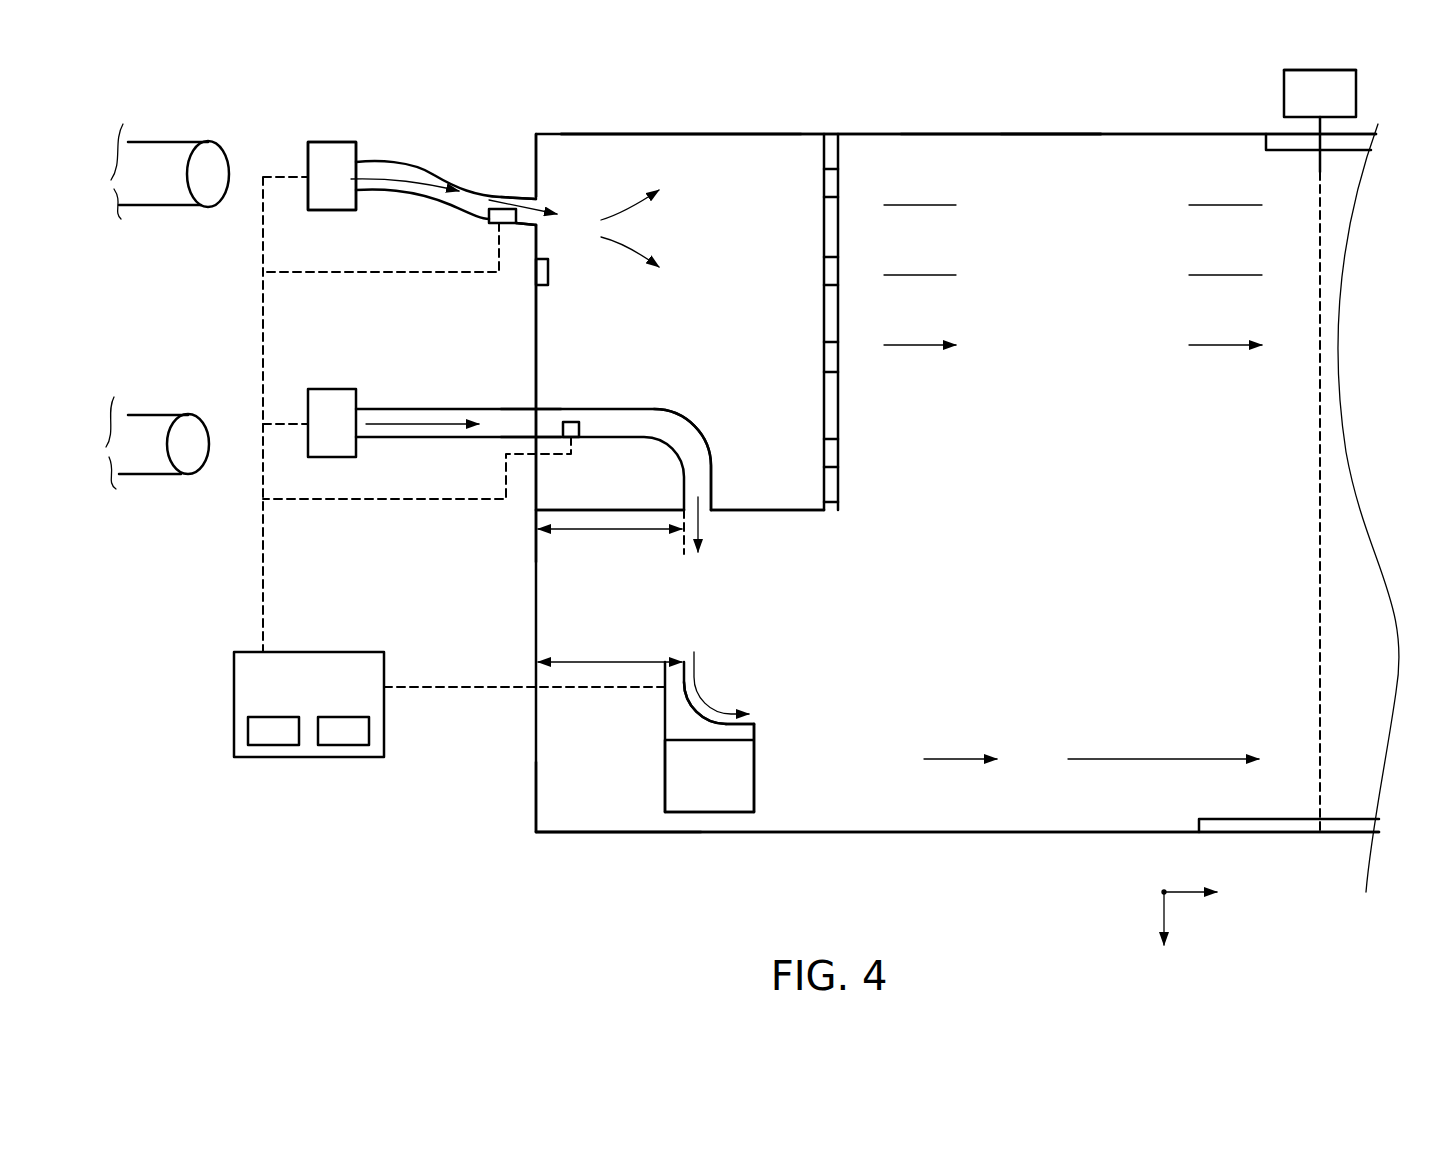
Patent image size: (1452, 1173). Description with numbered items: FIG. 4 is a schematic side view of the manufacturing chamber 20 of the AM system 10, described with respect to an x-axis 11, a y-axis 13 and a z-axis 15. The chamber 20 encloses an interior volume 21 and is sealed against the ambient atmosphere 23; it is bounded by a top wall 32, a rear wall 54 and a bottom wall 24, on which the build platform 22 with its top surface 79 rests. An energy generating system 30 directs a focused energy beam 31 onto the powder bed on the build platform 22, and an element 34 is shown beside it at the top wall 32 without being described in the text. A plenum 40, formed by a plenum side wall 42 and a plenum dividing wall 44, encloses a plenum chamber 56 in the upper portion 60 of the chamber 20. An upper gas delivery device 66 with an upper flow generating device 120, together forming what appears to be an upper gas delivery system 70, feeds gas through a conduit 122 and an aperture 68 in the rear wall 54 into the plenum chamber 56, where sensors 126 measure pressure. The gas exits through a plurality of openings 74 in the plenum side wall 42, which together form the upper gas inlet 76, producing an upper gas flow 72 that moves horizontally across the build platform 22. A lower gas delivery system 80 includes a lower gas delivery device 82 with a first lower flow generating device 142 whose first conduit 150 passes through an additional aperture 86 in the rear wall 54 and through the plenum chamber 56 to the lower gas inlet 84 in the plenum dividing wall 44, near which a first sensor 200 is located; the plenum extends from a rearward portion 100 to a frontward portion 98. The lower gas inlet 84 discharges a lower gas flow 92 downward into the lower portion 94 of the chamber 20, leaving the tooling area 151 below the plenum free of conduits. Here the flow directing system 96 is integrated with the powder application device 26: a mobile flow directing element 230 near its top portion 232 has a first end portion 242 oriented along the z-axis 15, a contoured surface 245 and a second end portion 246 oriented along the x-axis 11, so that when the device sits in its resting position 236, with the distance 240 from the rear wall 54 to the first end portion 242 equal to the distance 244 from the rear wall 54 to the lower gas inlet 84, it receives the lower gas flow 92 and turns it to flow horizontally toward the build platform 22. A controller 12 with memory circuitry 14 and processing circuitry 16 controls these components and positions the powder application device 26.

The AM system 10 is at (1372, 97).
The x-axis 11 is at (1182, 888).
The controller 12 is at (302, 650).
The y-axis 13 is at (1160, 888).
The memory circuitry 14 is at (265, 715).
The z-axis 15 is at (1170, 912).
The processing circuitry 16 is at (340, 715).
The manufacturing chamber 20 is at (1107, 248).
The interior volume 21 is at (1055, 487).
The build platform 22 is at (1275, 823).
The ambient atmosphere 23 is at (985, 114).
The bottom wall 24 is at (865, 835).
The powder application device 26 is at (708, 812).
The energy generating system 30 is at (1280, 92).
The focused energy beam 31 is at (1322, 287).
The top wall 32 is at (900, 130).
The headliner 34 is at (1275, 140).
The plenum 40 is at (645, 165).
The plenum side wall 42 is at (837, 392).
The plenum dividing wall 44 is at (785, 507).
The rear wall 54 is at (533, 150).
The plenum chamber 56 is at (715, 296).
The upper portion 60 is at (1052, 172).
The upper gas delivery device 66 is at (170, 140).
The aperture 68 is at (528, 192).
The first air supply system 70 is at (305, 125).
The upper gas flow 72 is at (540, 207).
The plurality of openings 74 is at (823, 180).
The upper gas inlet 76 is at (932, 400).
The top surface 79 is at (1318, 835).
The lower gas delivery system 80 is at (227, 497).
The lower gas delivery device 82 is at (150, 413).
The lower gas inlet 84 is at (720, 495).
The additional apertures 86 is at (530, 402).
The lower gas flow 92 is at (445, 420).
The lower portion 94 is at (607, 858).
The flow directing system 96 is at (800, 743).
The frontward portion 98 is at (838, 515).
The rearward portion 100 is at (532, 530).
The upper flow generating device 120 is at (330, 140).
The conduit 122 is at (388, 157).
The sensors 126 is at (535, 280).
The first lower flow generating device 142 is at (332, 385).
The first conduit 150 is at (395, 405).
The tooling area 151 is at (573, 805).
The first sensor 200 is at (570, 418).
The mobile flow directing element 230 is at (662, 727).
The top portion 232 is at (763, 739).
The resting position 236 is at (658, 808).
The distance 240 is at (598, 656).
The first end portion 242 is at (683, 655).
The distance 244 is at (603, 545).
The contoured surface 245 is at (695, 667).
The second end portion 246 is at (758, 720).